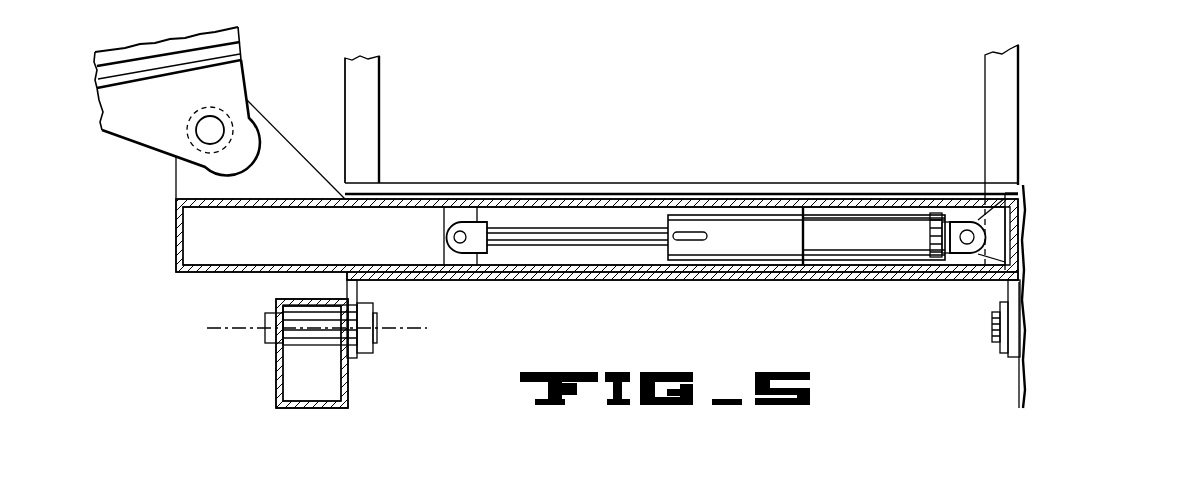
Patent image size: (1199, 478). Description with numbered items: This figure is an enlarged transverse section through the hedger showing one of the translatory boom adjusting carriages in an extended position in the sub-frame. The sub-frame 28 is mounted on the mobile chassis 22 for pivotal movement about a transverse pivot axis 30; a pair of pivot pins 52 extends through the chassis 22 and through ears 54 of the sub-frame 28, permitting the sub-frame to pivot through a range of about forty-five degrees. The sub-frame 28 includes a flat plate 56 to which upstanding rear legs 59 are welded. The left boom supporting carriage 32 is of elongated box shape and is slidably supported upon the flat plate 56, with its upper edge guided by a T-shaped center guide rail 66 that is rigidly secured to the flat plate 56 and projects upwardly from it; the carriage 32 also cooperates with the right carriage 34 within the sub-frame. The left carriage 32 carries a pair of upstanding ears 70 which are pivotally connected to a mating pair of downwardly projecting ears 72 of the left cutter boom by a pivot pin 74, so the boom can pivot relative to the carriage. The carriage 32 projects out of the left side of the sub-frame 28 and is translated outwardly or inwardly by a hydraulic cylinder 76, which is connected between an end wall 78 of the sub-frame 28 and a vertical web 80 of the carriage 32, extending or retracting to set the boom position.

The mobile chassis 22 is at (276, 366).
The sub-frame 28 is at (380, 80).
The transverse pivot axis 30 is at (222, 328).
The left hand boom supporting carriage 32 is at (178, 250).
The right hand boom supporting carriage 34 is at (1020, 185).
The pivot pin 52 is at (270, 315).
The ear 54 is at (352, 293).
The flat plate 56 is at (530, 280).
The rear leg 59 is at (378, 116).
The T-shaped center guide rail 66 is at (654, 183).
The upstanding ear 70 is at (267, 125).
The downwardly projecting ear 72 is at (232, 75).
The pivot pin 74 is at (198, 127).
The hydraulic cylinder 76 is at (772, 215).
The end wall 78 is at (1005, 262).
The vertical web 80 is at (466, 200).